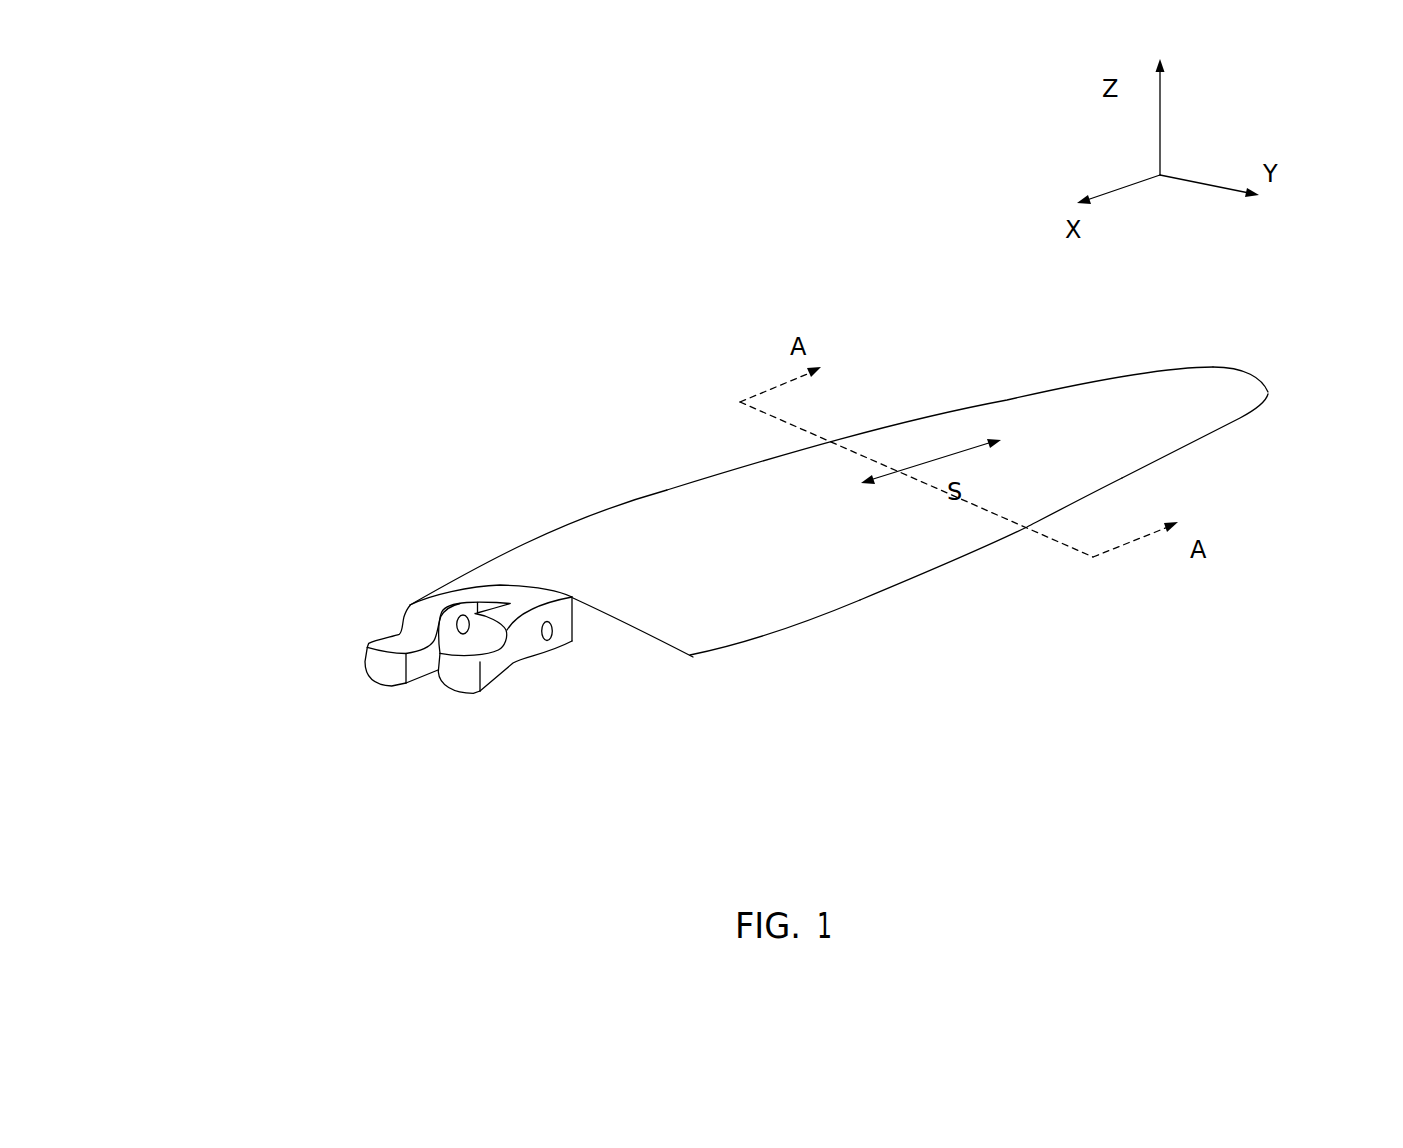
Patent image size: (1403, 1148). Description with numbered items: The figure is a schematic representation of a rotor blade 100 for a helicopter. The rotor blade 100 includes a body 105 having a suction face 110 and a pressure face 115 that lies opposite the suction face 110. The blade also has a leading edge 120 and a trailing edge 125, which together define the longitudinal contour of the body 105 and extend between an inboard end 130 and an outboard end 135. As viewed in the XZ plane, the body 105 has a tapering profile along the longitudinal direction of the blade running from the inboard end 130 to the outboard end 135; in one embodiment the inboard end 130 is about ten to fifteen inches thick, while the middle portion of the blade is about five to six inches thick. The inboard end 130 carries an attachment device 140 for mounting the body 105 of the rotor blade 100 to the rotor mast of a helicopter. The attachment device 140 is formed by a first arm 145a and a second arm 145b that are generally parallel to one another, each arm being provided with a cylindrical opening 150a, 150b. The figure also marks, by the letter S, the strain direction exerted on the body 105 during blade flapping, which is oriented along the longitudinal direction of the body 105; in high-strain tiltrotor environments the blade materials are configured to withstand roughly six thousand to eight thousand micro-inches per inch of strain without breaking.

The rotor blade 100 is at (512, 310).
The body 105 is at (1106, 402).
The suction face 110 is at (750, 513).
The pressure face 115 is at (790, 627).
The leading edge 120 is at (613, 505).
The trailing edge 125 is at (913, 576).
The inboard end 130 is at (640, 640).
The outboard end 135 is at (1217, 369).
The attachment device 140 is at (375, 691).
The first arm 145a is at (367, 648).
The second arm 145b is at (458, 685).
The cylindrical opening 150a is at (463, 615).
The cylindrical opening 150b is at (552, 632).